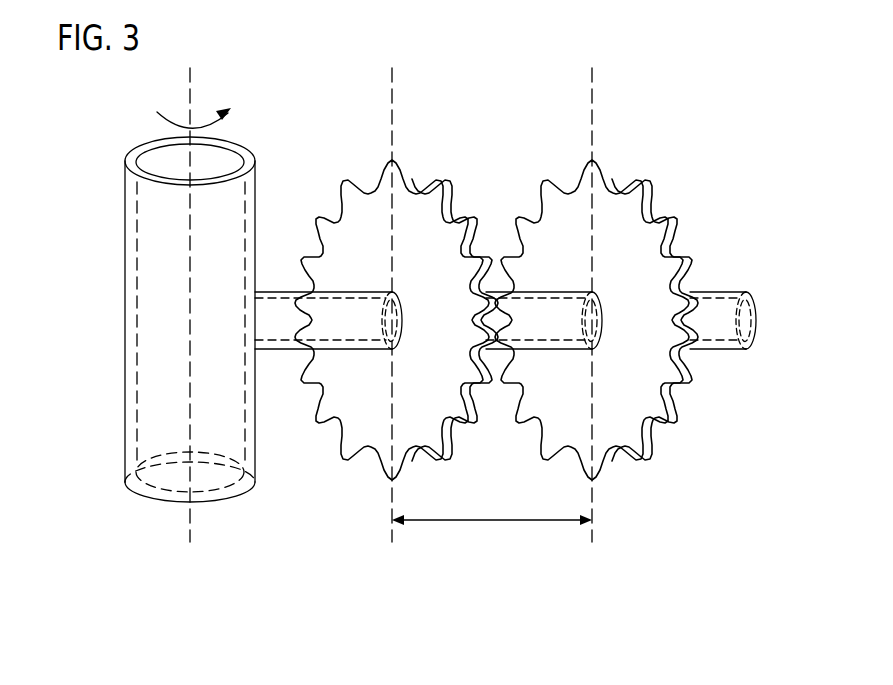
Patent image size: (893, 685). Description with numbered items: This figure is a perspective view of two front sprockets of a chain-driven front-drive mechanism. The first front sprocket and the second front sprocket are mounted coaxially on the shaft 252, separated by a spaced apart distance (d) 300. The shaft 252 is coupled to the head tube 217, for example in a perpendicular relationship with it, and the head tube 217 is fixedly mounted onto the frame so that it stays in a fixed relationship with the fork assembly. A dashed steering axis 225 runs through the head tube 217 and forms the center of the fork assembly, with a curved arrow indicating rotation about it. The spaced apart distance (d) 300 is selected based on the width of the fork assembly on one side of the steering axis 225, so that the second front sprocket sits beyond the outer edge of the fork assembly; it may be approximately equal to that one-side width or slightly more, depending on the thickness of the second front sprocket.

The head tube 217 is at (152, 336).
The steering axis 225 is at (192, 89).
The shaft 252 is at (715, 293).
The spaced apart distance (d) 300 is at (522, 521).